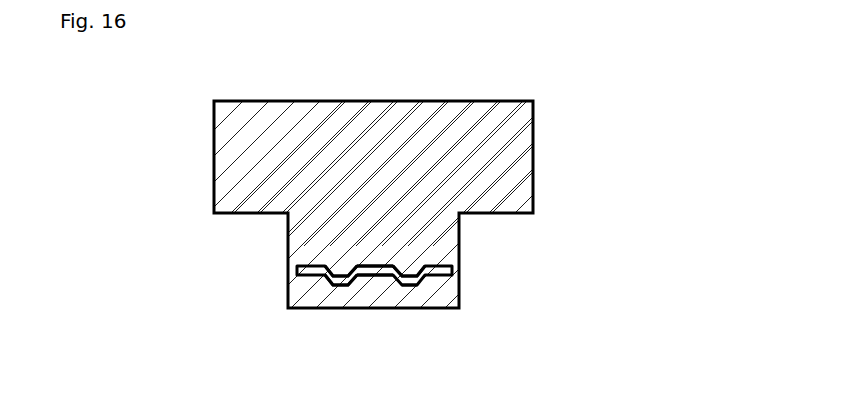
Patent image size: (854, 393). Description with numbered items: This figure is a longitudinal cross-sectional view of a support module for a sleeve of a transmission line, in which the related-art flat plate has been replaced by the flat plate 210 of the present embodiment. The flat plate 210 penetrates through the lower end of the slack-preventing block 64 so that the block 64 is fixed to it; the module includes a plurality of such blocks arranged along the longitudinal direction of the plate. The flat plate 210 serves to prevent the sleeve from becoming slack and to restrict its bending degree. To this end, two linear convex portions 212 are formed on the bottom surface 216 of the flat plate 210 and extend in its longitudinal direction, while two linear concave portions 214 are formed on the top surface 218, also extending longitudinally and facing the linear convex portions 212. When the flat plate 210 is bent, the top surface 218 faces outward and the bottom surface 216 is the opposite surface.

The slack-preventing block 64 is at (527, 143).
The flat plate 210 is at (453, 274).
The linear convex portion 212 is at (415, 285).
The linear concave portion 214 is at (407, 267).
The bottom surface 216 is at (372, 277).
The top surface 218 is at (372, 268).